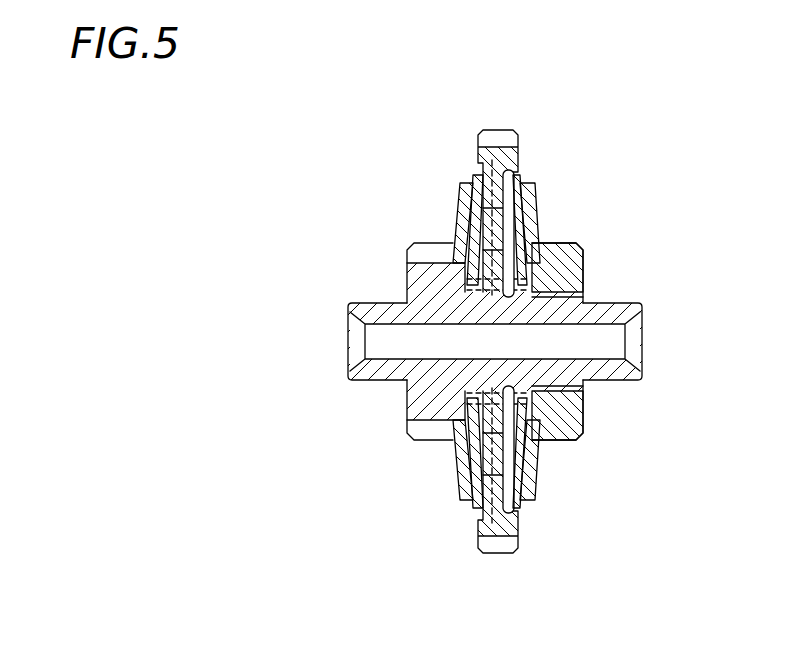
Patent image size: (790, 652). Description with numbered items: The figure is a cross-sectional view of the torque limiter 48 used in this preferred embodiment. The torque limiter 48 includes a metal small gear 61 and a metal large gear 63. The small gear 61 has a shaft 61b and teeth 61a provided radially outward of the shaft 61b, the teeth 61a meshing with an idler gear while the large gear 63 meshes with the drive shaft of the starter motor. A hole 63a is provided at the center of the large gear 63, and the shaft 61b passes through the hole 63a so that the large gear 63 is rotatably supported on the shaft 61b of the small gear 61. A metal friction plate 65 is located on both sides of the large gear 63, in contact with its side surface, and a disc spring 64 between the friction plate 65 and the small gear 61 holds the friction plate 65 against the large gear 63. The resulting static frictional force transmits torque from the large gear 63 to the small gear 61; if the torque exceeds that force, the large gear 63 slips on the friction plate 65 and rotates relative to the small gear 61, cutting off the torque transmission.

The torque limiter 48 is at (340, 158).
The small gear 61 is at (285, 212).
The teeth 61a is at (428, 243).
The shaft 61b is at (348, 331).
The large gear 63 is at (495, 130).
The hole 63a is at (505, 300).
The disc spring 64 is at (457, 198).
The friction plate 65 is at (471, 221).